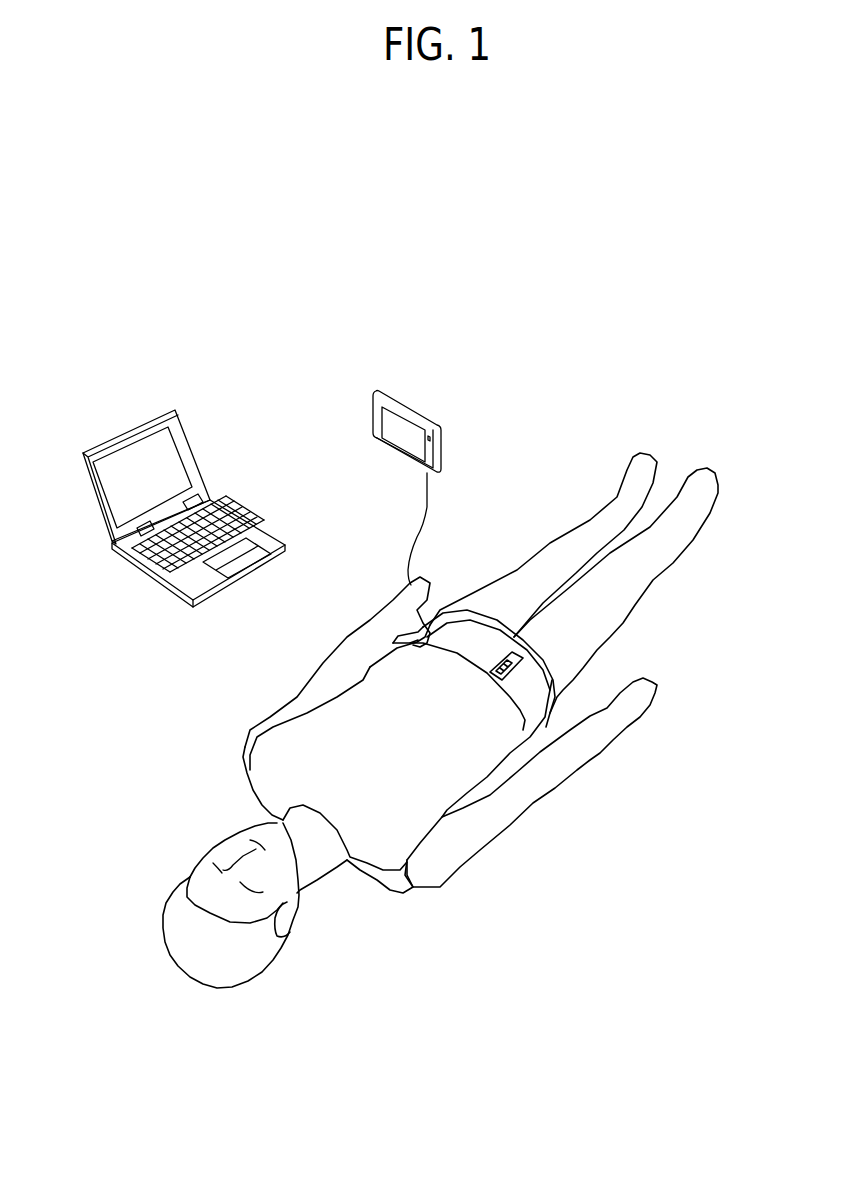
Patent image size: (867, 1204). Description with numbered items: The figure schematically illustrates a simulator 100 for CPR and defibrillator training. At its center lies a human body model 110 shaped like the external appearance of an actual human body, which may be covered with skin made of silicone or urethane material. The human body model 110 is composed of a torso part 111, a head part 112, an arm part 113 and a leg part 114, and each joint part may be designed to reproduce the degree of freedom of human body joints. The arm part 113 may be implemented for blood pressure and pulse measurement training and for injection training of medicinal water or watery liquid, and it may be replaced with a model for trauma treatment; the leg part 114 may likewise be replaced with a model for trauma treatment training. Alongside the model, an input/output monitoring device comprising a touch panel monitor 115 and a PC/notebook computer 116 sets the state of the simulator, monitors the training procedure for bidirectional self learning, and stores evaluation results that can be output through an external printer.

The simulator 100 is at (222, 312).
The human body model 110 is at (497, 843).
The torso part 111 is at (388, 883).
The head part 112 is at (207, 987).
The arm part 113 is at (600, 757).
The leg part 114 is at (650, 577).
The touch panel monitor 115 is at (407, 402).
The PC/notebook computer 116 is at (145, 422).